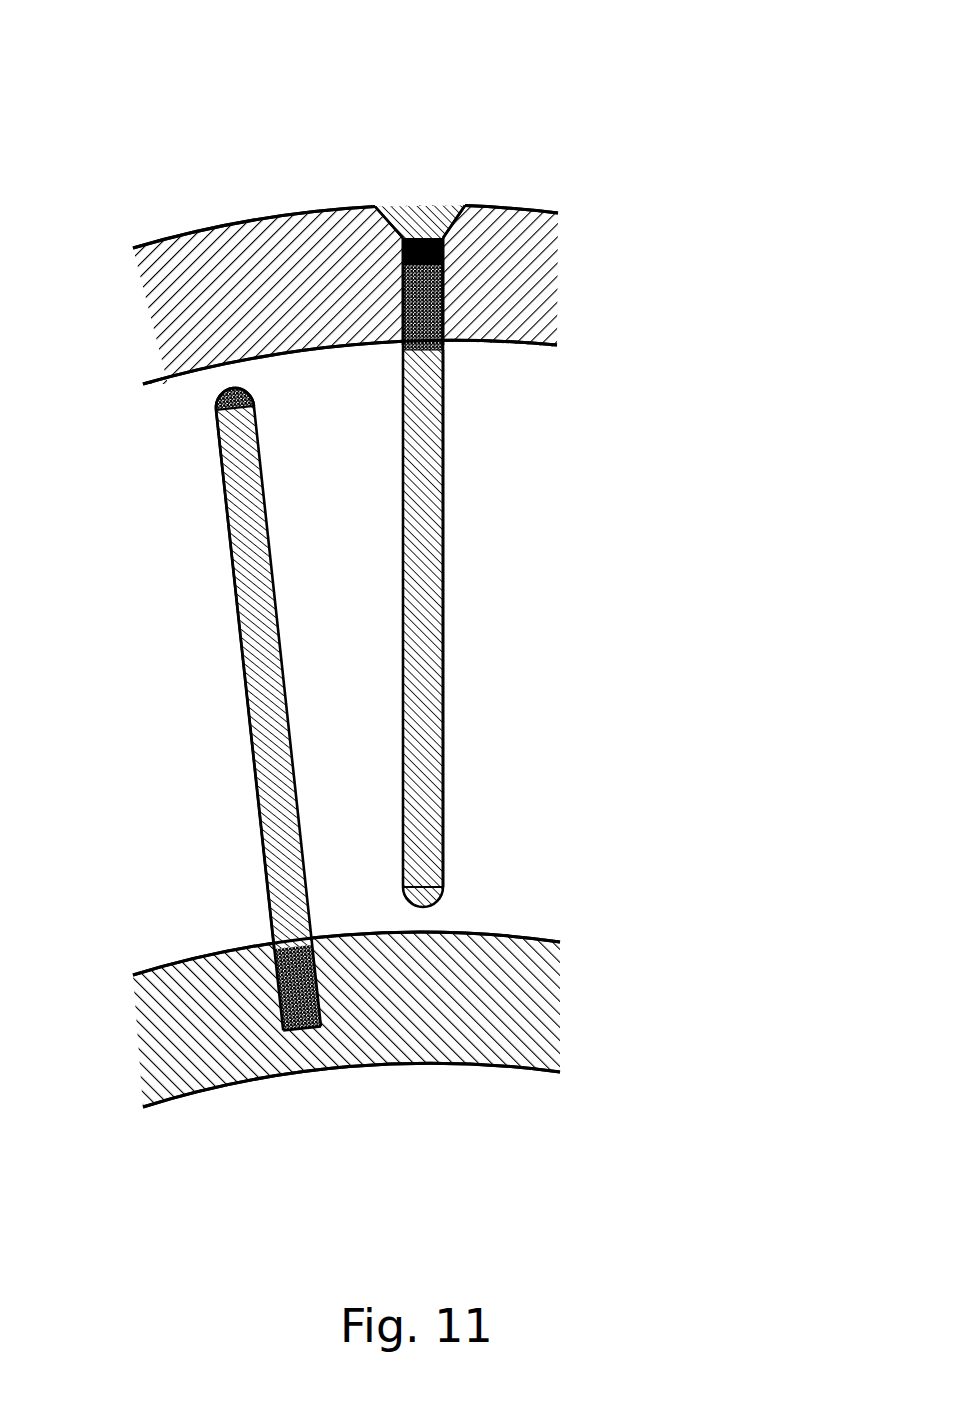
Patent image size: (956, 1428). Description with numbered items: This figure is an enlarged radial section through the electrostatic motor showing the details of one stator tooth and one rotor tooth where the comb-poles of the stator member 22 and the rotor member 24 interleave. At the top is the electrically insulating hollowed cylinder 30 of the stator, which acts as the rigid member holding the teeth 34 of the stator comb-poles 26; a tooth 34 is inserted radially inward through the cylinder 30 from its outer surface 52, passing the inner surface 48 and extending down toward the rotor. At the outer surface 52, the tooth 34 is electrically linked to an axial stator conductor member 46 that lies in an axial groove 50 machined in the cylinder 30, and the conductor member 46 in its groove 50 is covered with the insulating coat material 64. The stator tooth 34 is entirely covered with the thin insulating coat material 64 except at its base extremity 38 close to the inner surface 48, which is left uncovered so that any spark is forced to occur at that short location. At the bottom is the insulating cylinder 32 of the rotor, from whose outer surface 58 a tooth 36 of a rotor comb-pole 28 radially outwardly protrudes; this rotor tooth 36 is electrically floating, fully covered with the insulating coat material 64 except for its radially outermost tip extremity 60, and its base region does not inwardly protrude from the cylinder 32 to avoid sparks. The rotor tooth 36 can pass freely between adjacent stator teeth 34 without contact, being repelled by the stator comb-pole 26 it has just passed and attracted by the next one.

The stator member 22 is at (258, 217).
The rotor member 24 is at (256, 1082).
The stator comb-pole 26 is at (452, 564).
The rotor comb-pole 28 is at (210, 523).
The stator cylinder 30 is at (568, 218).
The rotor cylinder 32 is at (503, 1069).
The stator tooth 34 is at (445, 625).
The rotor tooth 36 is at (240, 645).
The base extremity 38 is at (445, 340).
The stator conductor member 46 is at (402, 248).
The inner surface 48 is at (527, 348).
The axial groove 50 is at (393, 210).
The outer surface 52 is at (183, 240).
The outer surface 58 is at (530, 937).
The tip extremity 60 is at (217, 389).
The insulating coat material 64 is at (417, 208).